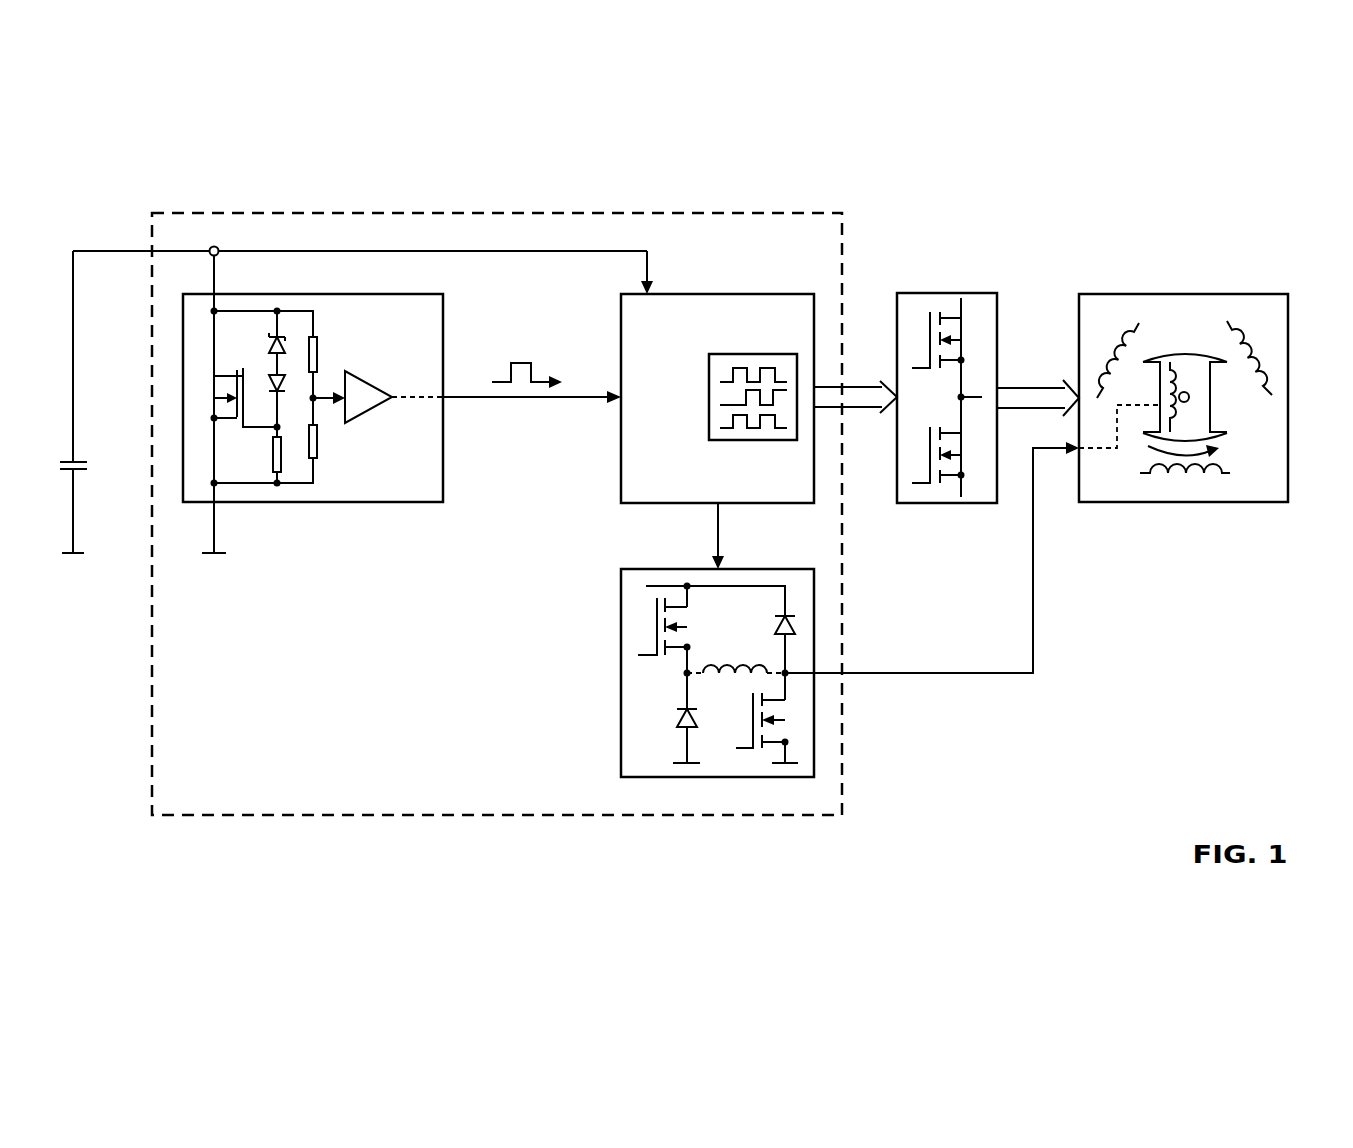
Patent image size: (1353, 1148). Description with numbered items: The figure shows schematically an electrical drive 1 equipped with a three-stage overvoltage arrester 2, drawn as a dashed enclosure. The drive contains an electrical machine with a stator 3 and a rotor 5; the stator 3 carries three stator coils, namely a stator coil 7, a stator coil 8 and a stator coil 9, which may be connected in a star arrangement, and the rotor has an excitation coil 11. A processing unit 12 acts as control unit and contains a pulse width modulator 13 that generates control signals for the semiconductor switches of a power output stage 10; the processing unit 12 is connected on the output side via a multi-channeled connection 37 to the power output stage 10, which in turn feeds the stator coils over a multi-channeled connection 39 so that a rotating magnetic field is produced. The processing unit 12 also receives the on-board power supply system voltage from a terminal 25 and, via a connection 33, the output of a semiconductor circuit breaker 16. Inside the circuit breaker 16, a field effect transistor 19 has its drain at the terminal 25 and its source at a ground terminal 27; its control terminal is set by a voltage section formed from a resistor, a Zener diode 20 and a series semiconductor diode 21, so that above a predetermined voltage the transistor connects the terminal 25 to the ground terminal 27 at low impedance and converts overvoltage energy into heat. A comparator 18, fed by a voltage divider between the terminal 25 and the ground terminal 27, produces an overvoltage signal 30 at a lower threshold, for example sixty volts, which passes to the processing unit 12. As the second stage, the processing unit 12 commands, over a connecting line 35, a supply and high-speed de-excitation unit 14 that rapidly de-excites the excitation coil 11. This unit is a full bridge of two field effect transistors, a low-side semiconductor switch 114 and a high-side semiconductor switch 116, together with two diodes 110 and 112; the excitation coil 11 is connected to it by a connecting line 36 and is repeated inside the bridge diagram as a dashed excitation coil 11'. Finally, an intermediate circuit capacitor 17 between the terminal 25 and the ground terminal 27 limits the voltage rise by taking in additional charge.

The electrical drive 1 is at (1124, 677).
The overvoltage arrester 2 is at (690, 212).
The stator 3 is at (1262, 293).
The rotor 5 is at (1207, 357).
The stator coil 7 is at (1140, 322).
The stator coil 8 is at (1273, 393).
The stator coil 9 is at (1223, 474).
The power output stage 10 is at (947, 292).
The excitation coil 11 is at (1172, 324).
The excitation coil 11' is at (736, 633).
The processing unit 12 is at (750, 293).
The pulse width modulator 13 is at (709, 362).
The supply and high-speed de-excitation unit 14 is at (621, 668).
The semiconductor circuit breaker 16 is at (392, 293).
The intermediate circuit capacitor 17 is at (85, 460).
The comparator 18 is at (372, 383).
The field effect transistor 19 is at (255, 367).
The Zener diode 20 is at (283, 348).
The semiconductor diode 21 is at (290, 392).
The terminal 25 is at (214, 246).
The ground terminal 27 is at (84, 556).
The overvoltage signal 30 is at (518, 360).
The connection 33 is at (530, 402).
The connecting line 35 is at (716, 528).
The connecting line 36 is at (933, 676).
The multi-channeled connection 37 is at (866, 385).
The multi-channeled connection 39 is at (1032, 386).
The diode 110 is at (795, 625).
The diode 112 is at (679, 718).
The semiconductor switch 114 is at (750, 720).
The semiconductor switch 116 is at (655, 622).